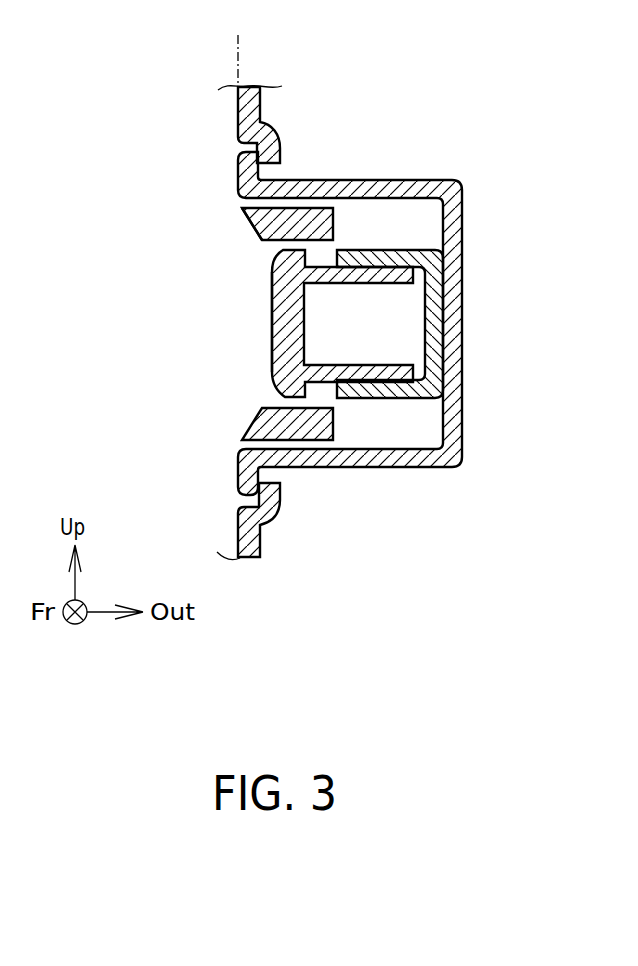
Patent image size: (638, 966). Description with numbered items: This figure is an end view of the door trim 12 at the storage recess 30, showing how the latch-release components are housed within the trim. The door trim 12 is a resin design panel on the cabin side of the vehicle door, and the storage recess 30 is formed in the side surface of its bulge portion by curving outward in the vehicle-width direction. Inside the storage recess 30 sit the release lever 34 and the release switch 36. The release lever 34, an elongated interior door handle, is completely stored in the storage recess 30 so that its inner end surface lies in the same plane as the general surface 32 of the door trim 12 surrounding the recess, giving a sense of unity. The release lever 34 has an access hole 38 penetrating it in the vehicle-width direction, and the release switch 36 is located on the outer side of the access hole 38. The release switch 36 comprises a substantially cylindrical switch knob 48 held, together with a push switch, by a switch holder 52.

The door trim 12 is at (358, 460).
The storage recess 30 is at (380, 234).
The general surface 32 is at (238, 60).
The release lever 34 is at (250, 223).
The release switch 36 is at (262, 356).
The access hole 38 is at (263, 243).
The switch knob 48 is at (279, 326).
The switch holder 52 is at (398, 250).